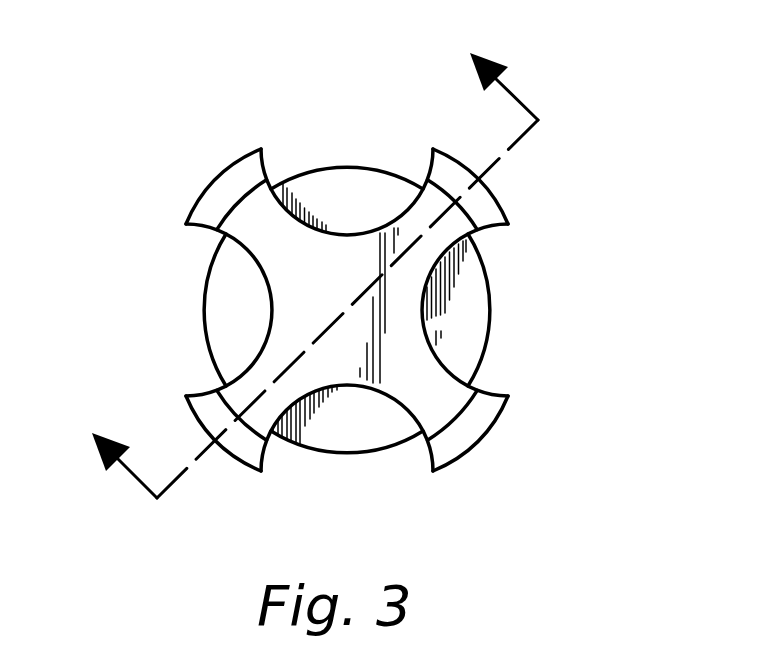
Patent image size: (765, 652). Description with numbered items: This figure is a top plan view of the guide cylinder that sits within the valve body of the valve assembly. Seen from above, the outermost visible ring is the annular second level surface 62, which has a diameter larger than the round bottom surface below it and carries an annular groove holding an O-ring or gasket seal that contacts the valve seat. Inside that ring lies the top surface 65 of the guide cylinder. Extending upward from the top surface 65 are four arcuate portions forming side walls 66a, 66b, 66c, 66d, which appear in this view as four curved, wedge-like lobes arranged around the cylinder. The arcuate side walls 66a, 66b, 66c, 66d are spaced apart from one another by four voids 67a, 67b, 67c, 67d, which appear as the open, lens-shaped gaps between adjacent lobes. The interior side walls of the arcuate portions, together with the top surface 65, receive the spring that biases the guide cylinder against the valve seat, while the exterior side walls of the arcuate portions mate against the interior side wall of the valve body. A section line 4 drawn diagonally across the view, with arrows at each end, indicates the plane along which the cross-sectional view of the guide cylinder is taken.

The annular second level surface 62 is at (467, 350).
The top surface 65 is at (425, 327).
The arcuate portion side wall 66a is at (496, 199).
The arcuate portion side wall 66b is at (455, 443).
The arcuate portion side wall 66c is at (237, 447).
The arcuate portion side wall 66d is at (216, 189).
The void 67a is at (540, 318).
The void 67b is at (348, 500).
The void 67c is at (153, 317).
The void 67d is at (358, 124).
The section line 4- 4 is at (300, 257).